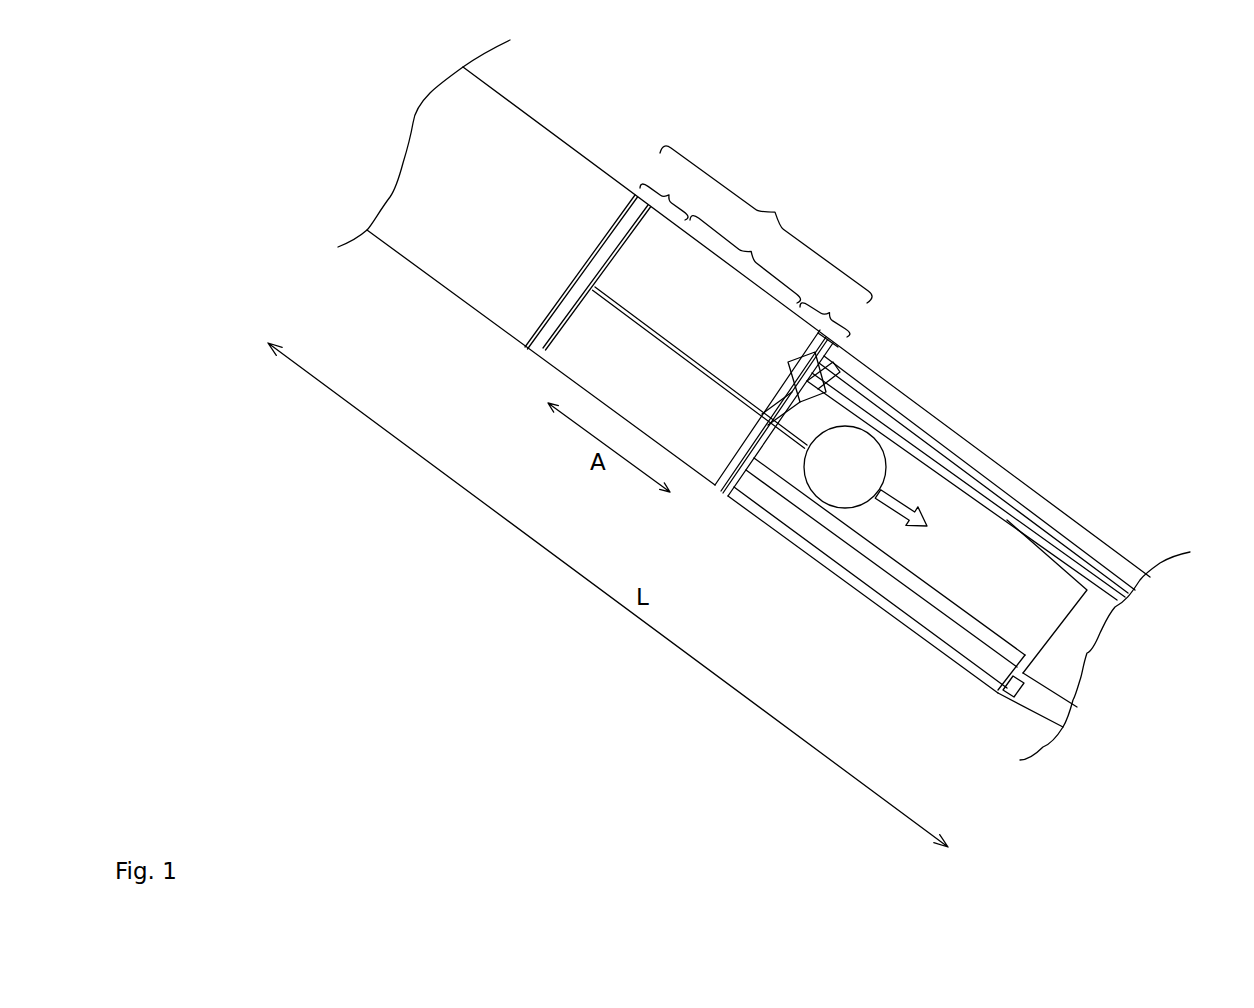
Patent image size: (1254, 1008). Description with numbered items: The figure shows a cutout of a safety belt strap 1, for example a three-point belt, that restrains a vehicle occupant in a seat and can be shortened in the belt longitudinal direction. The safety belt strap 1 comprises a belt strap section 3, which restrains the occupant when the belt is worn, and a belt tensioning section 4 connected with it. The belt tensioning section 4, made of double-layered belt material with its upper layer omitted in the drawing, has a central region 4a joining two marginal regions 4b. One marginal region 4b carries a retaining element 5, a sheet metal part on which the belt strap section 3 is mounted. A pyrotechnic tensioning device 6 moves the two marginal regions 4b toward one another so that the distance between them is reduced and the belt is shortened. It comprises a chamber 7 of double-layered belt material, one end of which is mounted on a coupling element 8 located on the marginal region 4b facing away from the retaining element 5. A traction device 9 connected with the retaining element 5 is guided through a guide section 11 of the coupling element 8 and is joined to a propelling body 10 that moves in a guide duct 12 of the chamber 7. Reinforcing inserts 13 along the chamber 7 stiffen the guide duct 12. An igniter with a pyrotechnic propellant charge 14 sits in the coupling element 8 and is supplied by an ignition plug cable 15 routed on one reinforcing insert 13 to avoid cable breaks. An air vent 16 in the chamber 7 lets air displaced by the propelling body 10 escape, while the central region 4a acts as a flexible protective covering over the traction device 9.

The safety belt strap 1 is at (259, 143).
The belt strap section 3 is at (548, 165).
The belt tensioning section 4 is at (766, 224).
The central region 4a is at (745, 259).
The marginal regions 4b is at (748, 255).
The retaining element 5 is at (523, 348).
The pyrotechnic tensioning device 6 is at (1118, 344).
The chamber 7 is at (1080, 520).
The coupling element 8 is at (720, 493).
The traction device 9 is at (803, 418).
The propelling body 10 is at (845, 467).
The guide section 11 is at (770, 437).
The guide duct 12 is at (943, 517).
The reinforcing inserts 13 is at (1007, 520).
The igniter with pyrotechnic propellant charge 14 is at (803, 383).
The ignition plug cable 15 is at (1093, 560).
The air vent 16 is at (1015, 677).